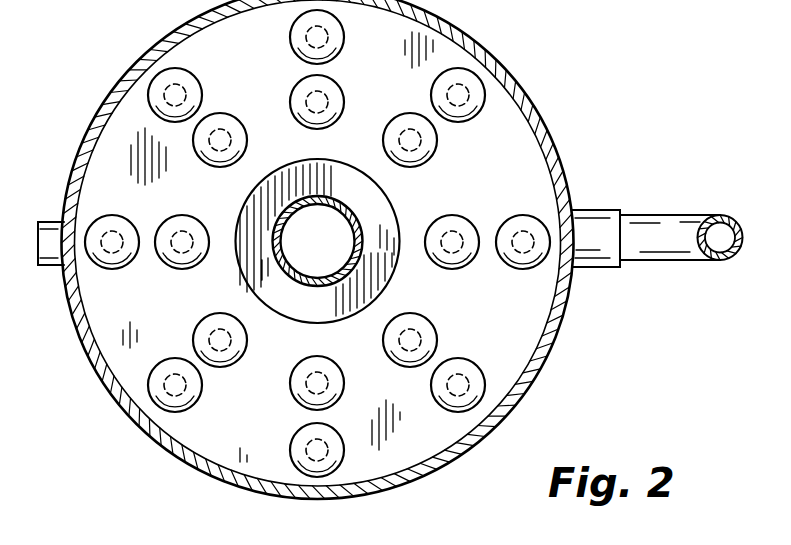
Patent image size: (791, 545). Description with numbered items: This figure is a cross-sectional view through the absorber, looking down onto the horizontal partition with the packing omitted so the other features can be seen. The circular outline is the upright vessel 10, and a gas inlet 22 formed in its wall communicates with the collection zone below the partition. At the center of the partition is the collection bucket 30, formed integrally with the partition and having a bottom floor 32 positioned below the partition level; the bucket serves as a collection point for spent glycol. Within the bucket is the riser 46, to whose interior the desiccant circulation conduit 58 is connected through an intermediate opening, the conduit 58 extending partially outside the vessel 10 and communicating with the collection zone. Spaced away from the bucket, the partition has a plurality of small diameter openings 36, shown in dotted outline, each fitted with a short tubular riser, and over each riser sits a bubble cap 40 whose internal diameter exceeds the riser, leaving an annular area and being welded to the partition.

The upright vessel 10 is at (555, 141).
The gas inlet 22 is at (50, 258).
The collection bucket 30 is at (260, 278).
The bottom floor 32 is at (377, 280).
The small diameter openings 36 is at (294, 434).
The bubble cap 40 is at (466, 121).
The riser 46 is at (363, 220).
The desiccant circulation conduit 58 is at (719, 259).